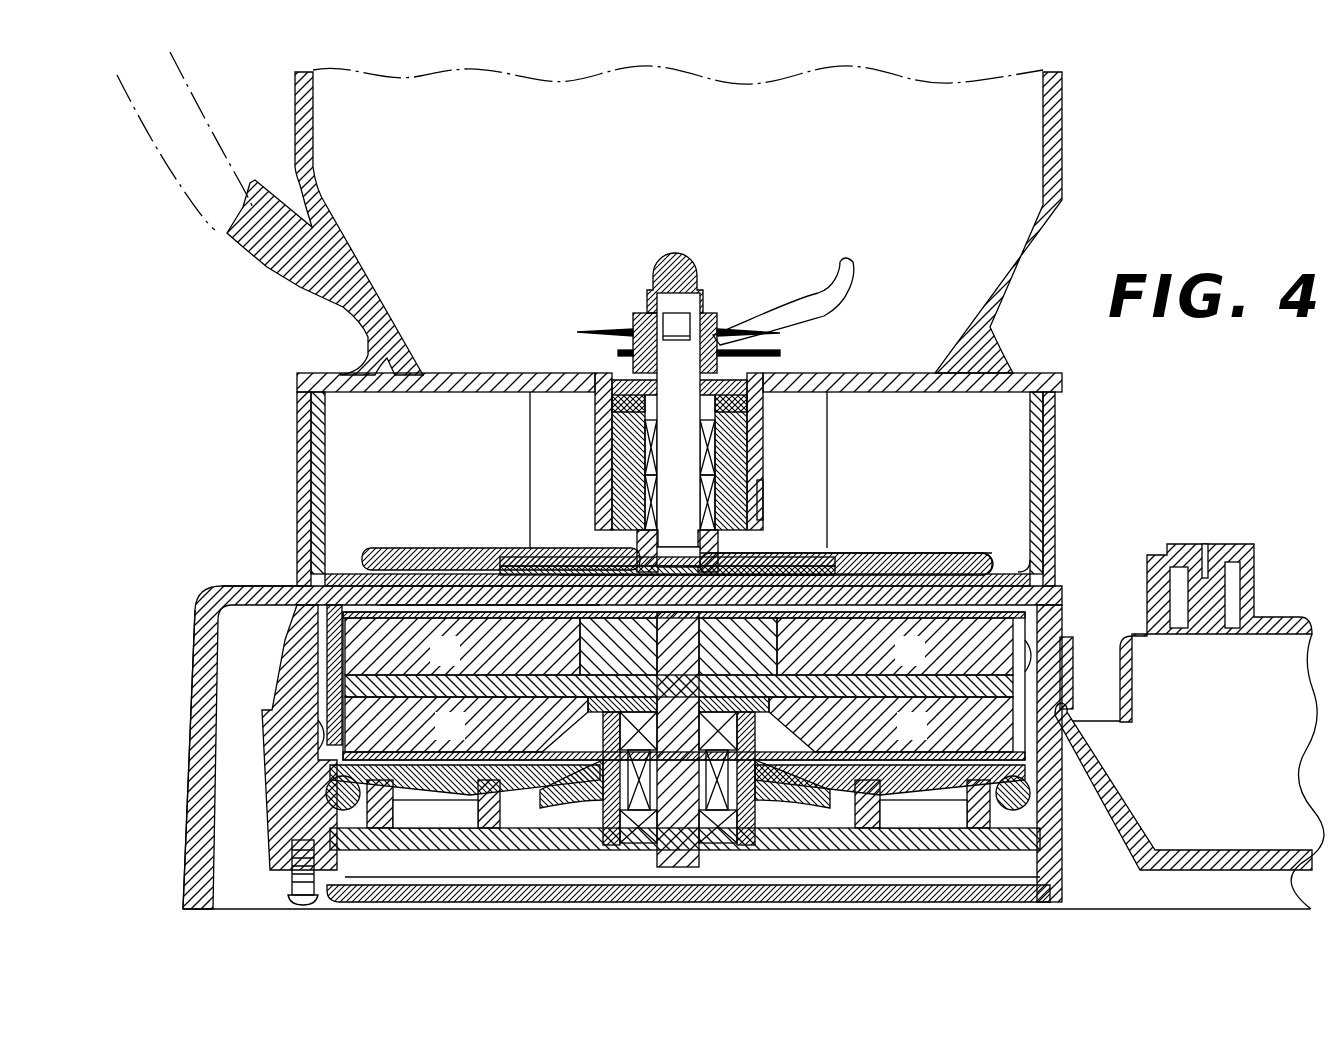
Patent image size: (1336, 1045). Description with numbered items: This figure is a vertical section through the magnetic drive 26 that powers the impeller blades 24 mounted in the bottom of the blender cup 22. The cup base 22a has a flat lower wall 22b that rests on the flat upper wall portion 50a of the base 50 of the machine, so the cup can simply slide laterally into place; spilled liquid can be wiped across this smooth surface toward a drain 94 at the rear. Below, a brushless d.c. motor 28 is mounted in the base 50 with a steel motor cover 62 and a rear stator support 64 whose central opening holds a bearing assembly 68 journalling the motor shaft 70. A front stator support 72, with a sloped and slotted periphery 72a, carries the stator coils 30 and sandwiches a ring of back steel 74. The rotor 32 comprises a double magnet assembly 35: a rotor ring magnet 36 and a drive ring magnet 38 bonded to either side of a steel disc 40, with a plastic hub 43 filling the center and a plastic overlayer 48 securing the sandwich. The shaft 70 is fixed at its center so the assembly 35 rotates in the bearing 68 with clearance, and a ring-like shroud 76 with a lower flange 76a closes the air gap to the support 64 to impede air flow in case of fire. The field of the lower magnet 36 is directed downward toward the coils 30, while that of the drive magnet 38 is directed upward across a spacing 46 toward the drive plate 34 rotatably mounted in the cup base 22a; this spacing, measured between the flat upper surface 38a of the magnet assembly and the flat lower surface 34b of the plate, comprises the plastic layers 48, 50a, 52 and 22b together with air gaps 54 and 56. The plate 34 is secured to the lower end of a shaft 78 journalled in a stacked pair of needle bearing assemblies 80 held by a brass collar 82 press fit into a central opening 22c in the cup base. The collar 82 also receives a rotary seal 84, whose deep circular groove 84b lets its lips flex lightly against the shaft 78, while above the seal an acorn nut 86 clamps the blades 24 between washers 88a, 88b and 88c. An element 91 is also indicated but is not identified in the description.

The blender cup 22 is at (1065, 160).
The cup base 22a is at (1062, 435).
The flat lower wall of the cup base 22b is at (350, 575).
The central cylindrical-walled opening 22c is at (602, 442).
The impeller blades 24 is at (777, 315).
The magnetic drive 26 is at (262, 584).
The brushless d.c. motor 28 is at (205, 815).
The stator coils 30 is at (1030, 795).
The rotor 32 is at (1040, 680).
The drive plate 34 is at (828, 615).
The lower surface of the drive plate 34b is at (498, 555).
The double magnet assembly 35 is at (1030, 660).
The rotor ring magnet 36 is at (612, 560).
The drive ring magnet 38 is at (1000, 612).
The upper surface of the magnet assembly 38a is at (458, 610).
The disc of magnetizable material 40 is at (330, 688).
The plastic hub 43 is at (760, 665).
The spacing 46 is at (840, 553).
The plastic overlayer 48 is at (423, 610).
The base of the blender/shaver 50 is at (176, 622).
The flat upper wall portion of the base 50a is at (290, 584).
The plastic over-molding of the drive plate 52 is at (950, 555).
The air gap 54 is at (1042, 565).
The air gap 56 is at (978, 556).
The steel motor cover 62 is at (690, 903).
The rear stator support 64 is at (820, 877).
The bearing assembly 68 is at (756, 795).
The motor shaft 70 is at (690, 845).
The front stator support 72 is at (875, 830).
The periphery of the front stator support 72a is at (387, 840).
The ring of back steel 74 is at (935, 830).
The ring-like shroud 76 is at (297, 648).
The lower flange of the shroud 76a is at (325, 735).
The shaft 78 is at (686, 474).
The needle bearing assemblies 80 is at (716, 470).
The brass collar 82 is at (746, 430).
The rotary seal 84 is at (740, 352).
The deep circular groove 84b is at (760, 395).
The acorn nut 86 is at (694, 262).
The washer 88a is at (637, 320).
The washer 88b is at (578, 334).
The washer 88c is at (620, 354).
The sleeve edge 91 is at (764, 500).
The drain 94 is at (1140, 528).